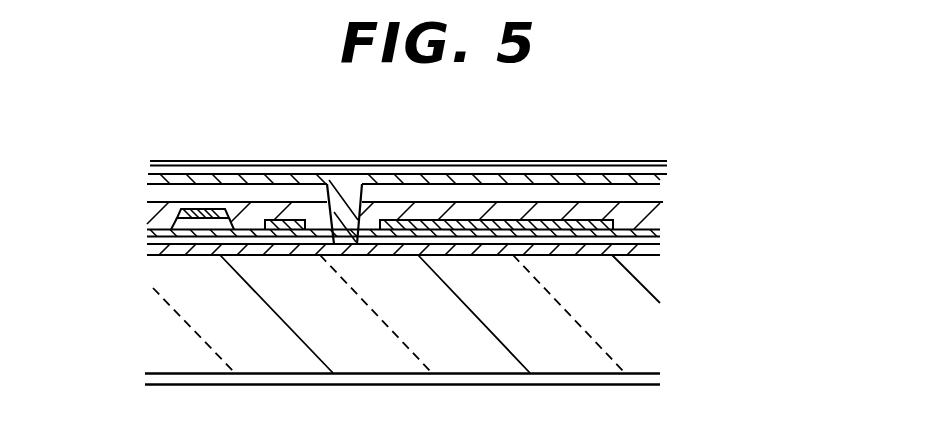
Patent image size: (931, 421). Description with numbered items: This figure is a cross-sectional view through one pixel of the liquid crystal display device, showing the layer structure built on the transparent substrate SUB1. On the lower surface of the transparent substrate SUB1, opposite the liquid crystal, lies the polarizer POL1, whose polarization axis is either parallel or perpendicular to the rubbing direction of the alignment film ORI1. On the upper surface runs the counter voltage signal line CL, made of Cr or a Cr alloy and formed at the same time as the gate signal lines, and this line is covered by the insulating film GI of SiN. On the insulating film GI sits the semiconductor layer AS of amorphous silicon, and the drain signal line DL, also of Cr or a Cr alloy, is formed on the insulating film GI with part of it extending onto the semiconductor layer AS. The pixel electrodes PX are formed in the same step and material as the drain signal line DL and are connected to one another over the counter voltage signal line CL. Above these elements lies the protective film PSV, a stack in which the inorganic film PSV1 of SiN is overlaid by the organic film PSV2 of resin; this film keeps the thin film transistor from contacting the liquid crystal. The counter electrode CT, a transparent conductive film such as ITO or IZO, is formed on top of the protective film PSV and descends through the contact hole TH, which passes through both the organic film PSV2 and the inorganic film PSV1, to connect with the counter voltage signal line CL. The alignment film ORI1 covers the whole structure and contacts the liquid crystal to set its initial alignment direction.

The alignment film ORI1 is at (152, 163).
The counter electrode CT is at (497, 174).
The protective film PSV is at (502, 203).
The organic film PSV2 is at (653, 197).
The inorganic film PSV1 is at (653, 222).
The contact hole TH is at (361, 216).
The drain signal line DL is at (180, 213).
The semiconductor layer AS is at (172, 225).
The pixel electrode PX is at (284, 218).
The insulating film GI is at (156, 238).
The counter voltage signal line CL is at (657, 256).
The transparent substrate SUB1 is at (602, 315).
The polarizer POL1 is at (660, 378).